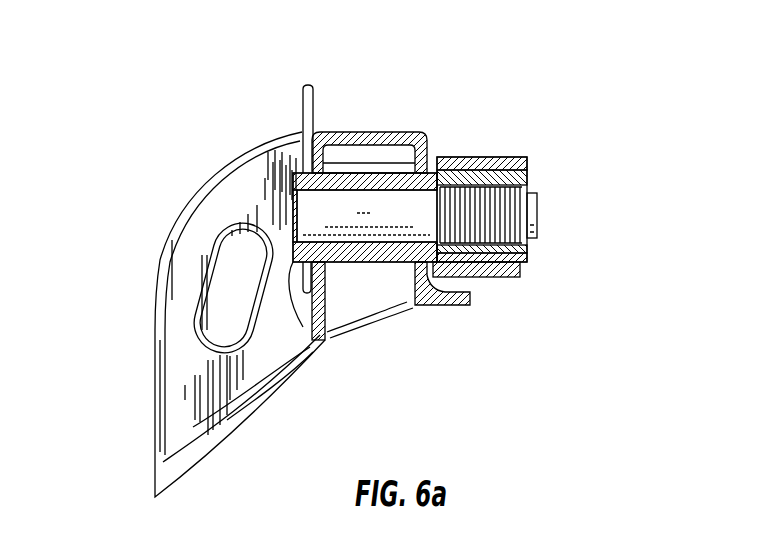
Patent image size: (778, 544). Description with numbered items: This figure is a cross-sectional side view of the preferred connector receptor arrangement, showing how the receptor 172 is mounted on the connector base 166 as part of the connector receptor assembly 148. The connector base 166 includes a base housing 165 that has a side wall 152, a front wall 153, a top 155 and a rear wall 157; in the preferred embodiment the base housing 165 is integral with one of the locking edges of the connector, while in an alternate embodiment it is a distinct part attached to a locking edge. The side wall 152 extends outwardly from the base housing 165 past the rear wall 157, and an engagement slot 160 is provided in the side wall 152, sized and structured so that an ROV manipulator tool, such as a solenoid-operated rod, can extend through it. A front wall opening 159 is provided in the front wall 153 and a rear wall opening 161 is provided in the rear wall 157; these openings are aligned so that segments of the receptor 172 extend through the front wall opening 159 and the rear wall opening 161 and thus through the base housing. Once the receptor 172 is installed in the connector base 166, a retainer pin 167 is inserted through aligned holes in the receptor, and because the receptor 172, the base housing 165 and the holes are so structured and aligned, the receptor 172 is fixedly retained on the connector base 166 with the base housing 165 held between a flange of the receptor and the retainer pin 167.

The connector receptor assembly 148 is at (104, 152).
The side wall 152 is at (252, 157).
The front wall 153 is at (432, 157).
The top 155 is at (362, 132).
The rear wall 157 is at (298, 150).
The front wall opening 159 is at (455, 275).
The engagement slot 160 is at (230, 293).
The rear wall opening 161 is at (290, 283).
The base housing 165 is at (441, 65).
The connector base 166 is at (185, 403).
The retainer pin 167 is at (305, 85).
The receptor 172 is at (520, 157).